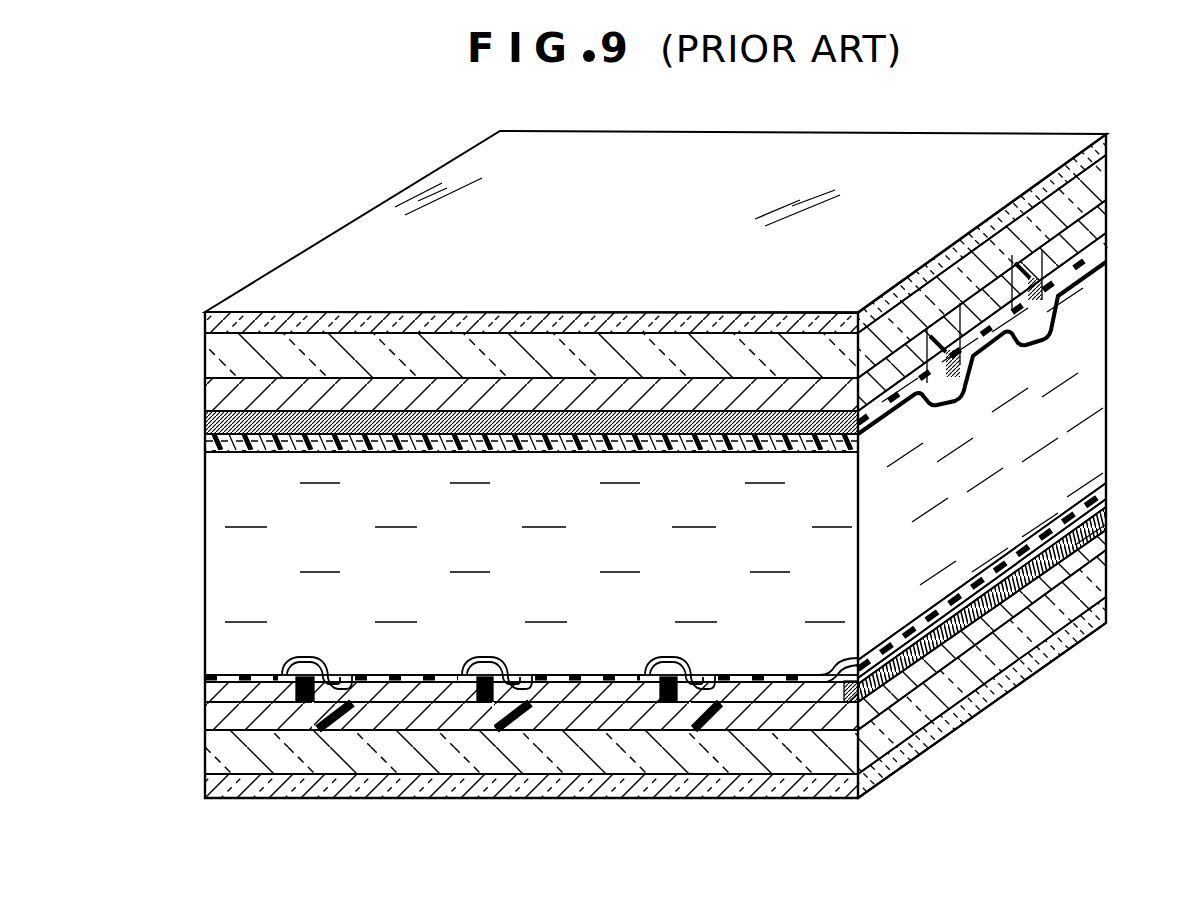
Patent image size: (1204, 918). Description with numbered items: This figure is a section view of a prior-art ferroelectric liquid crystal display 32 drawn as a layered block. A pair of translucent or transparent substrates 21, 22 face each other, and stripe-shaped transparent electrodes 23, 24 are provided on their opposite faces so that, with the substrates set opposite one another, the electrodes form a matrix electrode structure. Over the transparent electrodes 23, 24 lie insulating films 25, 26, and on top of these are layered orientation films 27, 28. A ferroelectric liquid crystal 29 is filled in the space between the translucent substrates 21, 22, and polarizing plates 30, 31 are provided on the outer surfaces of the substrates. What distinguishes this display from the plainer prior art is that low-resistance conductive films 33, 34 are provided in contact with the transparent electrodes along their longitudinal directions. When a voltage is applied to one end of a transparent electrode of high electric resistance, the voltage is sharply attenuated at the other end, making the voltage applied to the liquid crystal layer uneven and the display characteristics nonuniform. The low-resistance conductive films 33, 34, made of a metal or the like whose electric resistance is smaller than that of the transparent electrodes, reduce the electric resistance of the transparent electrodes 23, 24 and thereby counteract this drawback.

The translucent substrate 21 is at (1102, 599).
The translucent substrate 22 is at (1102, 180).
The transparent electrode 23 is at (1102, 564).
The transparent electrode 24 is at (1102, 220).
The insulating film 25 is at (1102, 506).
The insulating film 26 is at (1102, 258).
The orientation film 27 is at (1102, 473).
The orientation film 28 is at (1102, 300).
The ferroelectric liquid crystal 29 is at (1102, 342).
The polarizing plate 30 is at (1102, 630).
The polarizing plate 31 is at (1102, 142).
The ferroelectric liquid crystal display 32 is at (1030, 140).
The low-resistance conductive film 33 is at (1102, 537).
The low-resistance conductive film 34 is at (204, 424).